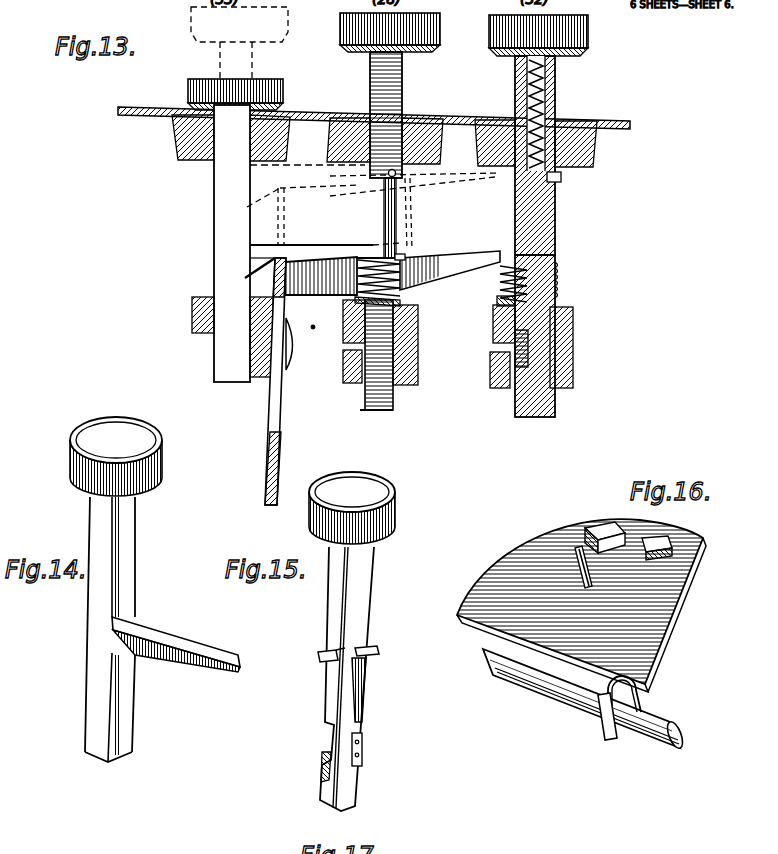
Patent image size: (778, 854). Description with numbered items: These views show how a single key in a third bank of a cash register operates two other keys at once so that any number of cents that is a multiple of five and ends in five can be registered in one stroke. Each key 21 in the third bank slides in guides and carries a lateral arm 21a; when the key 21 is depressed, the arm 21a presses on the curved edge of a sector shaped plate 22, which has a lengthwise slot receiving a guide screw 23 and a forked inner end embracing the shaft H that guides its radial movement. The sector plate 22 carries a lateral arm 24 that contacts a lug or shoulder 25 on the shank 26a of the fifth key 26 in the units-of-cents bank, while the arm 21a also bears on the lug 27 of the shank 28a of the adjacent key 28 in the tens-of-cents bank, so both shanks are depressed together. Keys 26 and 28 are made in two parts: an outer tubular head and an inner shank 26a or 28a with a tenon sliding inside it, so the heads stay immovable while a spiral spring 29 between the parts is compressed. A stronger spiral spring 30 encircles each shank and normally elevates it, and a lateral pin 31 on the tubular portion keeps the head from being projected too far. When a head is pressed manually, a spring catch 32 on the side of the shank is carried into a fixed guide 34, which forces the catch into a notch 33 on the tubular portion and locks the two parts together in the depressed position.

In FIG. 13, the key 21 is at (222, 224).
In FIG. 14, the key 21 is at (95, 610).
In FIG. 13, the lateral arm 21a is at (312, 242).
In FIG. 14, the lateral arm 21a is at (197, 664).
In FIG. 13, the sector shaped plate 22 is at (270, 452).
In FIG. 16, the sector shaped plate 22 is at (527, 560).
In FIG. 13, the guide screw 23 is at (300, 353).
In FIG. 13, the lateral arm 24 is at (455, 264).
In FIG. 16, the lateral arm 24 is at (599, 530).
In FIG. 13, the lug or shoulder 25 is at (503, 268).
In FIG. 15, the lug or shoulder 25 is at (317, 656).
In FIG. 13, the fifth key 26 is at (556, 108).
In FIG. 15, the fifth key 26 is at (366, 597).
In FIG. 13, the shank 26a is at (553, 216).
In FIG. 15, the shank 26a is at (366, 772).
In FIG. 13, the lug 27 is at (314, 315).
In FIG. 13, the key 28 is at (394, 94).
In FIG. 13, the shank 28a is at (386, 205).
In FIG. 13, the spiral spring 29 is at (524, 110).
In FIG. 13, the spiral spring 30 is at (418, 296).
In FIG. 13, the lateral pin 31 is at (392, 168).
In FIG. 15, the lateral pin 31 is at (331, 668).
In FIG. 13, the spring catch 32 is at (554, 263).
In FIG. 15, the spring catch 32 is at (370, 656).
In FIG. 13, the notch 33 is at (560, 178).
In FIG. 15, the notch 33 is at (370, 648).
In FIG. 13, the fixed guide 34 is at (422, 360).
In FIG. 16, the shaft H is at (652, 723).